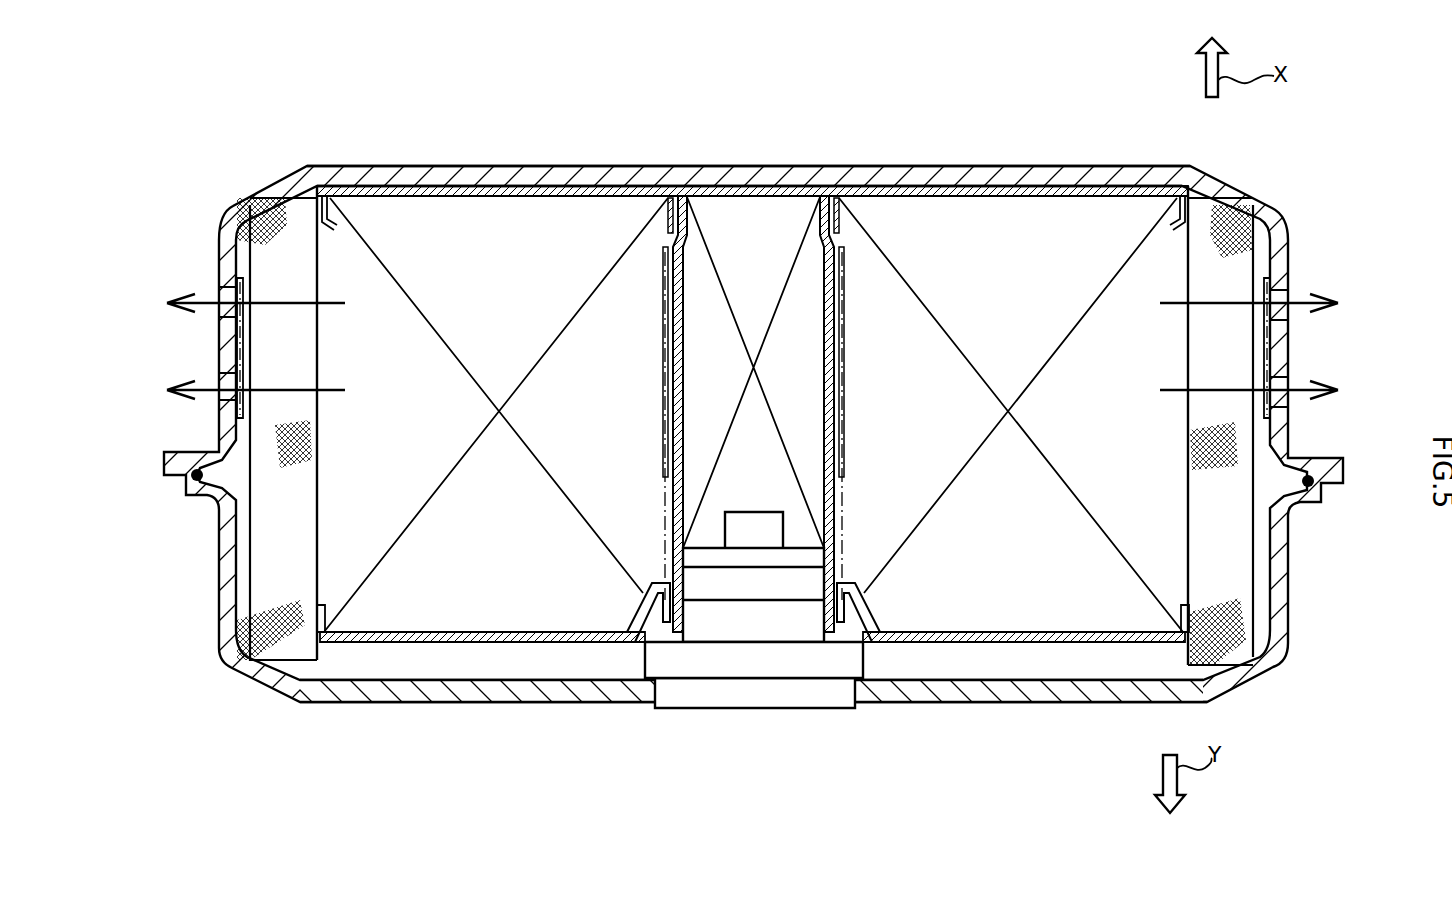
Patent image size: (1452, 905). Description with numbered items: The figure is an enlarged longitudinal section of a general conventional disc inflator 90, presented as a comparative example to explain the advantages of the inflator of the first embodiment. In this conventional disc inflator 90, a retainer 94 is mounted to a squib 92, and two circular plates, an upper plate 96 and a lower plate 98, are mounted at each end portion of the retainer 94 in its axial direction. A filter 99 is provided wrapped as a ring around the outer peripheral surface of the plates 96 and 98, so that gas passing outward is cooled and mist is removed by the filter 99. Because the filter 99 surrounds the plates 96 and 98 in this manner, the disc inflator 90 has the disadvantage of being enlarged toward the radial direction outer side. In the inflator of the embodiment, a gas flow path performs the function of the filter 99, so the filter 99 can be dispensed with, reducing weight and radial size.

The disc inflator 90 is at (1093, 139).
The squib 92 is at (830, 697).
The retainer 94 is at (833, 517).
The upper circular plate 96 is at (1010, 184).
The lower circular plate 98 is at (1020, 683).
The filter 99 is at (1240, 600).